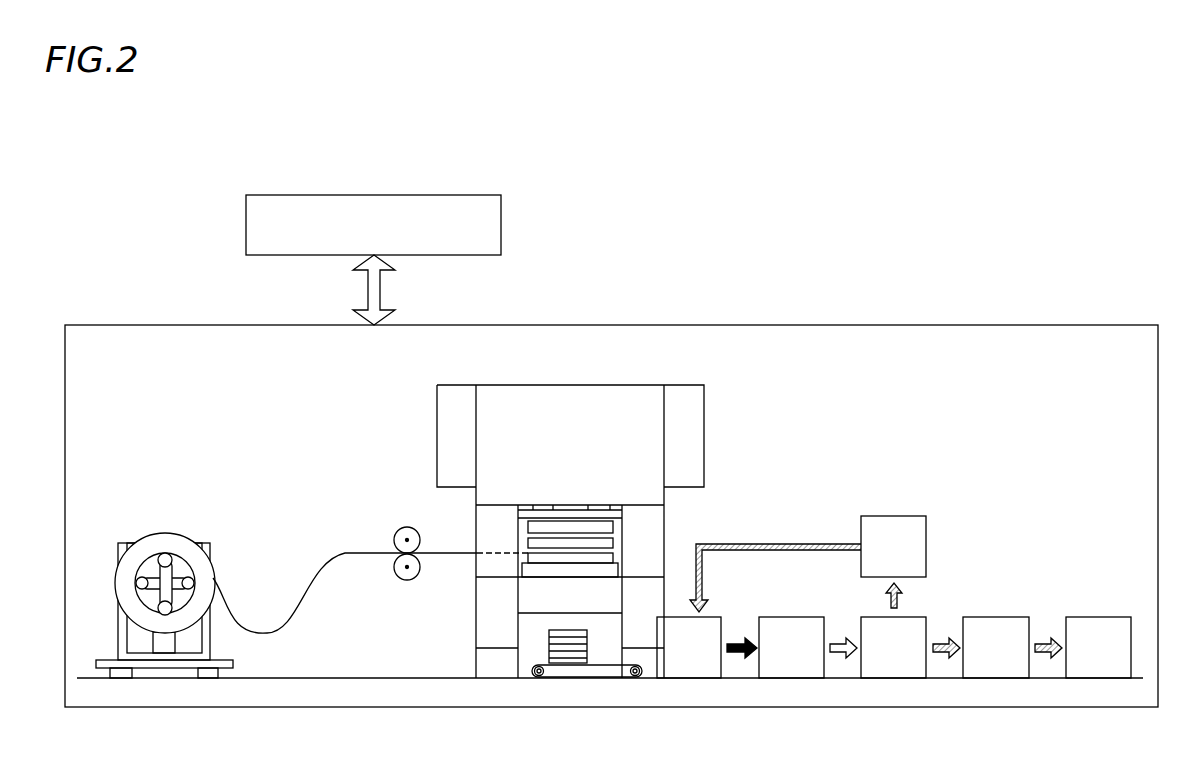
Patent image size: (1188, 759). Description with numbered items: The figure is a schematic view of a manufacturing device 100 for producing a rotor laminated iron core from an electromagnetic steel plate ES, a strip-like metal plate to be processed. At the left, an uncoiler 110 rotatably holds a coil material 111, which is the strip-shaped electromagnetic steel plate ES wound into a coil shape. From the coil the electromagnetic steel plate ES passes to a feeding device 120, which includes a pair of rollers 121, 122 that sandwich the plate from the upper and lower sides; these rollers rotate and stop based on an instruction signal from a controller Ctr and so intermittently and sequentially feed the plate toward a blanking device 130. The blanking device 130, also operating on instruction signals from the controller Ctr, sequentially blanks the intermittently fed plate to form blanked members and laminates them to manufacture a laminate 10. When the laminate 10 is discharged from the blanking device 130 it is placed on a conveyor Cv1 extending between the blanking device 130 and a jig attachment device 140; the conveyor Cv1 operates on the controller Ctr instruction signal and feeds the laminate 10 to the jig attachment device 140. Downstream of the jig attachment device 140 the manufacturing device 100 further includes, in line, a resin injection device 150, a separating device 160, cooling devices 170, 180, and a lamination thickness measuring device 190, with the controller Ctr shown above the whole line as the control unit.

The manufacturing device 100 is at (137, 228).
The controller Ctr is at (502, 222).
The uncoiler 110 is at (127, 543).
The coil material 111 is at (163, 533).
The electromagnetic steel plate ES is at (232, 603).
The feeding device 120 is at (404, 531).
The roller 121 is at (413, 529).
The roller 122 is at (417, 572).
The blanking device 130 is at (731, 400).
The laminate 10 is at (530, 637).
The conveyor Cv1 is at (586, 680).
The jig attachment device 140 is at (708, 617).
The resin injection device 150 is at (800, 617).
The separating device 160 is at (915, 617).
The cooling device 170 is at (895, 516).
The cooling device 180 is at (1012, 617).
The lamination thickness measuring device 190 is at (1098, 617).